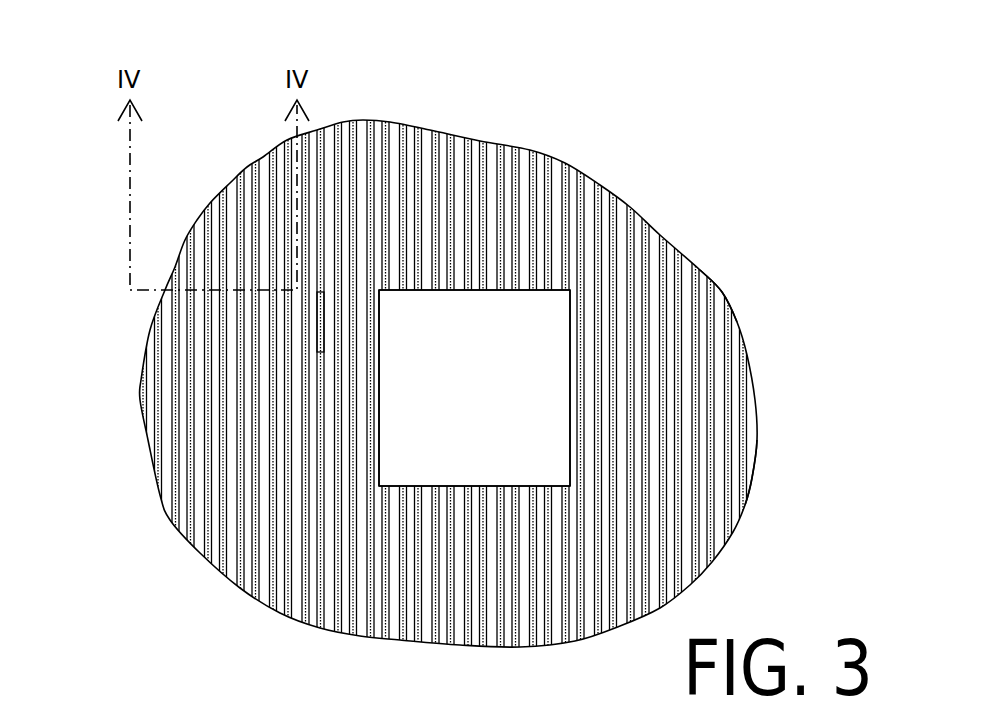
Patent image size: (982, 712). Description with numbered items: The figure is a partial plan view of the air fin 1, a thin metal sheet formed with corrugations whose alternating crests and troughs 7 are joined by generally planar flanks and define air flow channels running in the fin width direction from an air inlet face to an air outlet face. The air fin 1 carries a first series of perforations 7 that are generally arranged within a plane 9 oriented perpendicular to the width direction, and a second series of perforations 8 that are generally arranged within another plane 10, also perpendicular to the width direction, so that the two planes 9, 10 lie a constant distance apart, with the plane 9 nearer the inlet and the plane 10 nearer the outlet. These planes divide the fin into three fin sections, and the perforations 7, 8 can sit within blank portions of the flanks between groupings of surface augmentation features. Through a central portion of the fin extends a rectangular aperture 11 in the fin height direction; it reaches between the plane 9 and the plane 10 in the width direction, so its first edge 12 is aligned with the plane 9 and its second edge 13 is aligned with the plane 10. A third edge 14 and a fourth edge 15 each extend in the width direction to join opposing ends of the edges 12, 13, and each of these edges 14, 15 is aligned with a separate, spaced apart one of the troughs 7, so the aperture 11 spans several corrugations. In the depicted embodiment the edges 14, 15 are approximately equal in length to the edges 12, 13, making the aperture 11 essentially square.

The air fin 1 is at (520, 127).
The first series of perforations 7 is at (208, 488).
The second series of perforations 8 is at (320, 291).
The plane 9 is at (759, 488).
The plane 10 is at (723, 291).
The rectangular aperture 11 is at (482, 332).
The first edge 12 is at (436, 486).
The second edge 13 is at (469, 291).
The third edge 14 is at (381, 395).
The fourth edge 15 is at (569, 380).